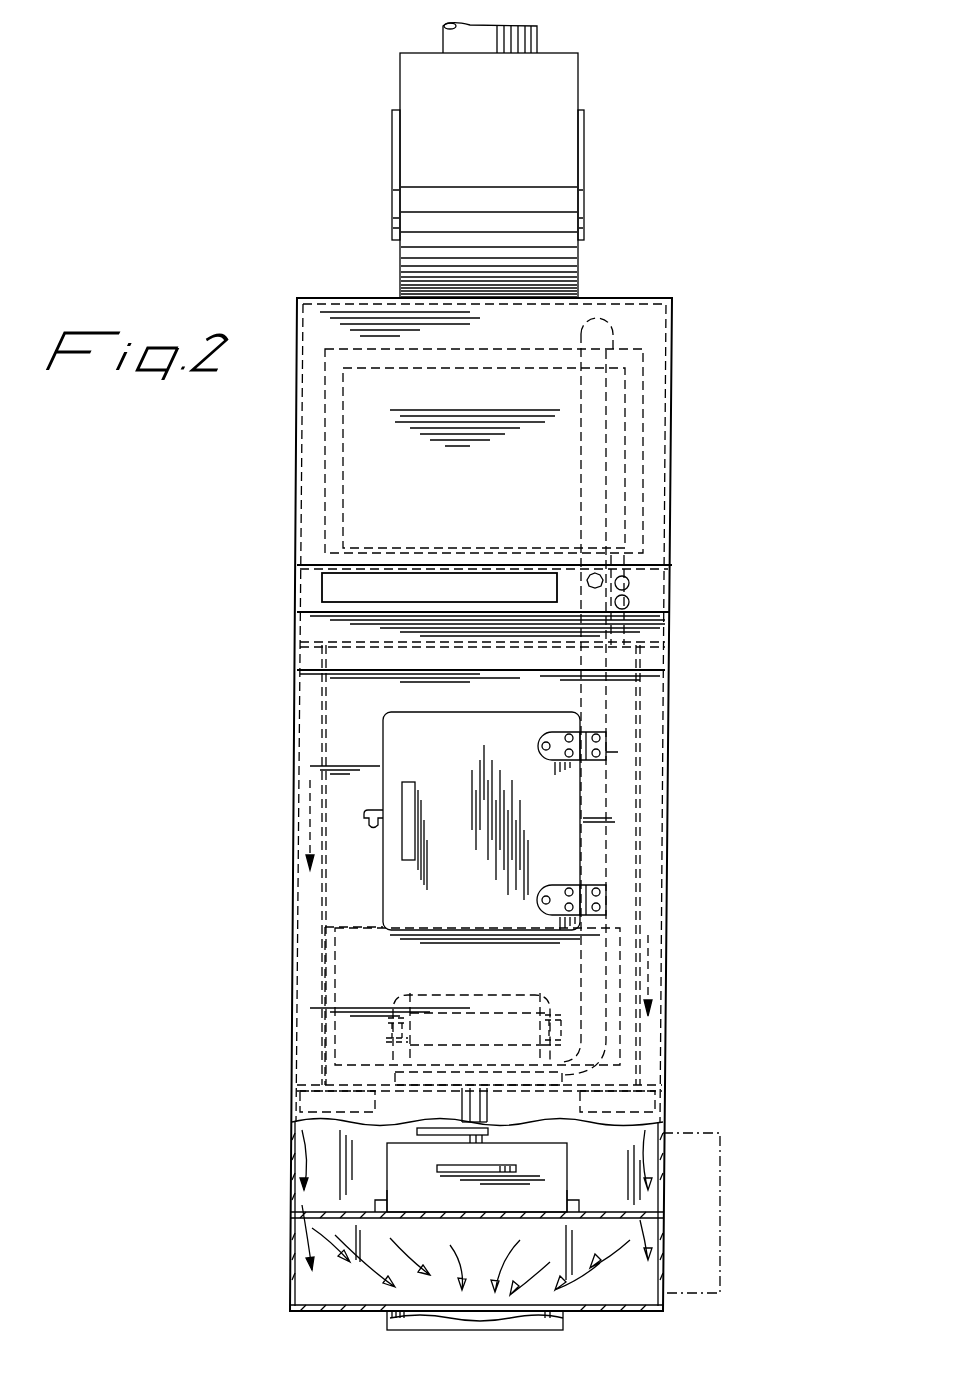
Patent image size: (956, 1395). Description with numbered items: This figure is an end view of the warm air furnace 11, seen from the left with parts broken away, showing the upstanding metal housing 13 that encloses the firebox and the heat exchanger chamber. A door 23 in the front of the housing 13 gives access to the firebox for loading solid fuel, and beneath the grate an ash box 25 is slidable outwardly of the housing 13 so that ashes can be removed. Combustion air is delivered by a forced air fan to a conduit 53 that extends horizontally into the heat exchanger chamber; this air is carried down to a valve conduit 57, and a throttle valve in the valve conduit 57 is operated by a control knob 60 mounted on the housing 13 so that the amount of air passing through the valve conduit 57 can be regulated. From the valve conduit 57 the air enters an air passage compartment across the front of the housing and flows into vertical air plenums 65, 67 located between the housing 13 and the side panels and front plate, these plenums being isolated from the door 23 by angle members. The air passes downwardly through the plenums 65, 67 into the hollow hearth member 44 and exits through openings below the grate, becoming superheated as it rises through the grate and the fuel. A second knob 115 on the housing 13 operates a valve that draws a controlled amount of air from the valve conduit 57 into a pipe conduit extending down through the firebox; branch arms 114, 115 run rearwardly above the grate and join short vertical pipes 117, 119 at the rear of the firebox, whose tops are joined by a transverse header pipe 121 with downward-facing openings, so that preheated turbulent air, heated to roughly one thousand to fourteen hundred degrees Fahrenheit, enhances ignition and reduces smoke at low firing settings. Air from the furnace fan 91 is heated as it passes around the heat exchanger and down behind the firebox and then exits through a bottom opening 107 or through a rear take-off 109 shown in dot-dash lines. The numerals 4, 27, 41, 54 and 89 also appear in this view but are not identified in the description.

The side wall 4 is at (322, 893).
The warm air furnace 11 is at (255, 520).
The housing 13 is at (673, 435).
The door 23 is at (385, 746).
The ash box 25 is at (557, 1157).
The lower compartment 27 is at (335, 957).
The conduit 41 is at (462, 1130).
The hearth member 44 is at (392, 1052).
The conduit 53 is at (615, 326).
The mounting plate 54 is at (417, 1131).
The valve conduit 57 is at (602, 576).
The control knob 60 is at (630, 602).
The vertical air plenum 65 is at (322, 917).
The vertical air plenum 67 is at (651, 945).
The exhaust duct 89 is at (540, 37).
The furnace fan 91 is at (568, 93).
The bottom opening 107 is at (565, 1323).
The rear take-off 109 is at (722, 1190).
The branch arm 114 is at (380, 1076).
The knob 115 is at (630, 583).
The vertical pipe 117 is at (393, 1028).
The vertical pipe 119 is at (560, 1015).
The transverse header pipe 121 is at (462, 1000).